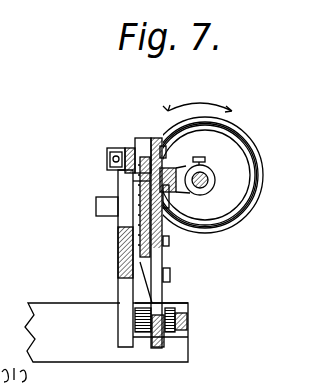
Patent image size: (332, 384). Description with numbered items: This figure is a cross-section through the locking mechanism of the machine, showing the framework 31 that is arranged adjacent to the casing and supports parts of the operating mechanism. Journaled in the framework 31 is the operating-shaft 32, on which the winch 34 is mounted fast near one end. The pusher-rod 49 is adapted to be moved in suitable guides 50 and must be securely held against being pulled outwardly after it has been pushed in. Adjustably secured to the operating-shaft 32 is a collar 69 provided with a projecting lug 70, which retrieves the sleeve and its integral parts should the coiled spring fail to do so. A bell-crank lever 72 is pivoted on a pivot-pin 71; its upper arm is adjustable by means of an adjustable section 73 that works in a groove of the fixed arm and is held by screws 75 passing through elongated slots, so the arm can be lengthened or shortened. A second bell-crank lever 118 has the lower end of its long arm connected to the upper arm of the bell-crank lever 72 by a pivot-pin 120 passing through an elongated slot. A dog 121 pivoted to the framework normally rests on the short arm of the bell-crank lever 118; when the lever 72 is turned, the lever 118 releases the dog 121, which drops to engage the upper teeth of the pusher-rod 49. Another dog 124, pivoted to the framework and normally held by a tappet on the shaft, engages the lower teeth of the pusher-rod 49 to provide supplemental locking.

The framework 31 is at (120, 257).
The operating-shaft 32 is at (207, 187).
The winch 34 is at (239, 137).
The pusher-rod 49 is at (133, 181).
The guides 50 is at (152, 140).
The collar 69 is at (211, 177).
The projecting lug 70 is at (180, 168).
The pivot-pin 71 is at (187, 322).
The bell-crank lever 72 is at (163, 342).
The adjustable section 73 is at (167, 207).
The screws 75 is at (176, 238).
The bell-crank lever 118 is at (148, 194).
The pivot-pin 120 is at (122, 268).
The dog 121 is at (141, 150).
The dog 124 is at (110, 206).